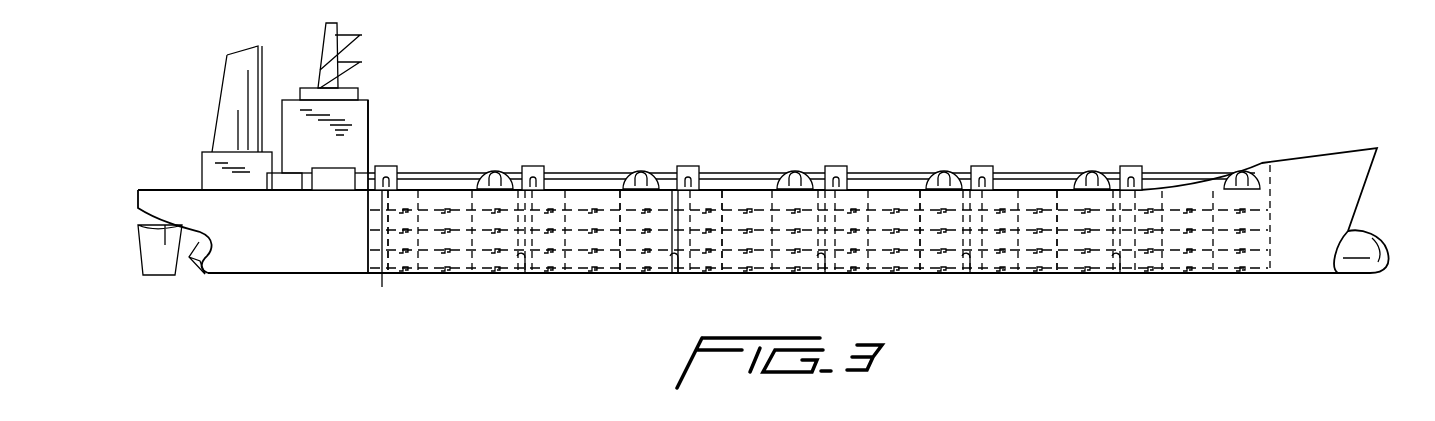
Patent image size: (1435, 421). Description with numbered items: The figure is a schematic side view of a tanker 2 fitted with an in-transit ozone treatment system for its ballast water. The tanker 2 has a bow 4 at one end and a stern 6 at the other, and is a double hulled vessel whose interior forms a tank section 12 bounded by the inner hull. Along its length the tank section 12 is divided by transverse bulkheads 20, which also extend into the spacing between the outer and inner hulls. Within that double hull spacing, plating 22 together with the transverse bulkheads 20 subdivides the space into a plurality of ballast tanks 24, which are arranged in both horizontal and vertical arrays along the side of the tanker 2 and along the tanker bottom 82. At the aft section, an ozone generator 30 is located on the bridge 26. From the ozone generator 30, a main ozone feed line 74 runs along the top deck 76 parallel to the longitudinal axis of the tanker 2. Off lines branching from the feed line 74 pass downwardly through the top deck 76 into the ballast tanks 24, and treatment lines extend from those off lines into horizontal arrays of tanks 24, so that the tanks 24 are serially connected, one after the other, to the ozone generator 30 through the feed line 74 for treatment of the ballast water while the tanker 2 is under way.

The tanker 2 is at (928, 137).
The bow 4 is at (1372, 167).
The stern 6 is at (135, 200).
The tank section 12 is at (733, 190).
The transverse bulkheads 20 is at (527, 274).
The plating 22 is at (432, 212).
The ballast tanks 24 is at (645, 205).
The bridge 26 is at (193, 190).
The ozone generator 30 is at (338, 168).
The main ozone feed line 74 is at (569, 173).
The top deck 76 is at (887, 178).
The tanker bottom 82 is at (382, 274).